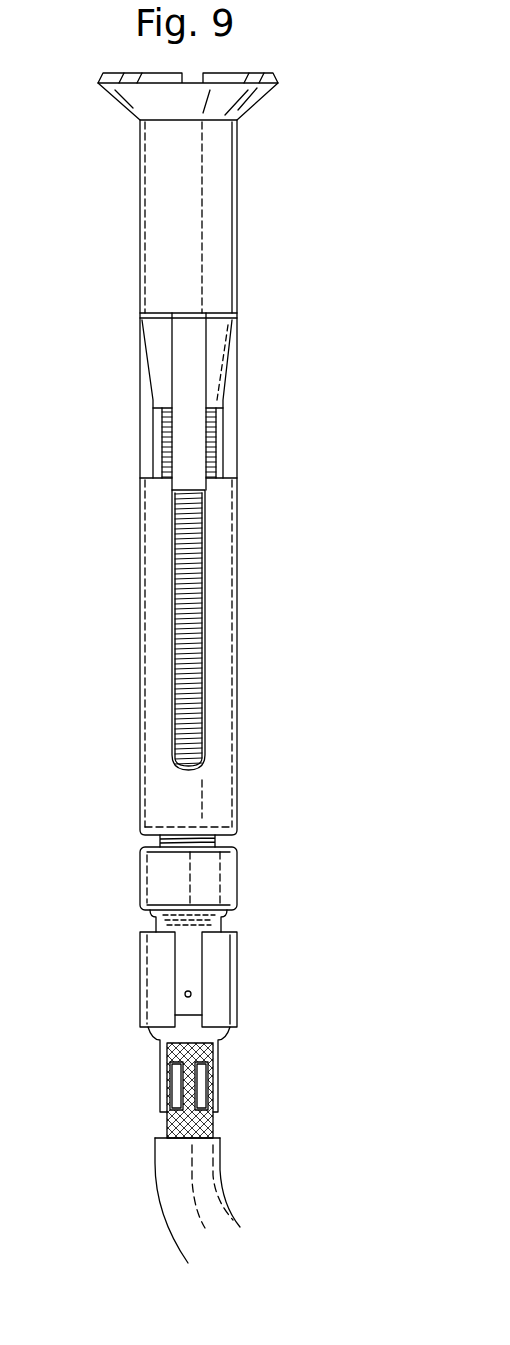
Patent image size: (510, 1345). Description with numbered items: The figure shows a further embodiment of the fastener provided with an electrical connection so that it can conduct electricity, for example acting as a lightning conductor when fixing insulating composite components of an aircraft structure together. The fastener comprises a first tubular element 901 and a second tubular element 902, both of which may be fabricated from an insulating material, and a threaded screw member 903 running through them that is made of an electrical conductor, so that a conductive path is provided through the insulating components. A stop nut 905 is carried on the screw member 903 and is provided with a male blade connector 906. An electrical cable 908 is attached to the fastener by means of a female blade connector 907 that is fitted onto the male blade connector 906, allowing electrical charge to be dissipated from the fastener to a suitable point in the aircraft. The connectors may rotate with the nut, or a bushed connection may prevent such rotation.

The first tubular element 901 is at (215, 220).
The second tubular element 902 is at (157, 562).
The screw member 903 is at (183, 673).
The stop nut 905 is at (209, 878).
The male blade connector 906 is at (195, 962).
The female blade connector 907 is at (155, 972).
The electrical cable 908 is at (175, 1187).